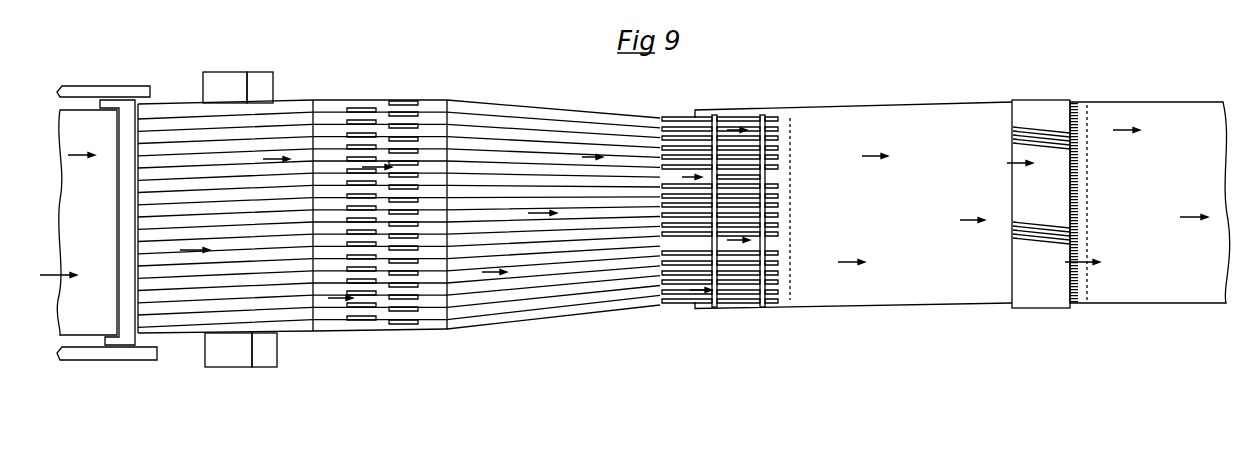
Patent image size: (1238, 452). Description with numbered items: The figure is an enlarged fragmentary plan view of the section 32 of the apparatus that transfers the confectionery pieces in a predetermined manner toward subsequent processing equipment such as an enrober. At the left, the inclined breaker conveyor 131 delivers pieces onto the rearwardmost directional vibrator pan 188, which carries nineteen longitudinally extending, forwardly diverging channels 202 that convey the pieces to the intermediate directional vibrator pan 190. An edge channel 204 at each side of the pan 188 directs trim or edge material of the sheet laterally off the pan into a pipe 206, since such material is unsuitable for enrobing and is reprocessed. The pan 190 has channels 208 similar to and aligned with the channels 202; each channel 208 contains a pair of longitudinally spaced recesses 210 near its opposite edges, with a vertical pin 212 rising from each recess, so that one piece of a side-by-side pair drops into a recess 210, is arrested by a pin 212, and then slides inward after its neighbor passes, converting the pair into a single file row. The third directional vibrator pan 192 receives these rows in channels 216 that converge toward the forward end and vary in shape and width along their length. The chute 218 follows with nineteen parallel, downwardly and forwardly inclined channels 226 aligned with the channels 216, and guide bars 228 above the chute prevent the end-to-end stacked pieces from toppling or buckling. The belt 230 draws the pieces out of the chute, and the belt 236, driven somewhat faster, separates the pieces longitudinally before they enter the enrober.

The section 32 is at (547, 74).
The conveyor 131 is at (55, 242).
The directional vibrator pan 188 is at (182, 338).
The directional vibrator pan 190 is at (412, 334).
The directional vibrator pan 192 is at (573, 315).
The channels 202 is at (143, 195).
The edge channel 204 is at (218, 108).
The pipe 206 is at (217, 78).
The channels 208 is at (333, 108).
The recesses 210 is at (362, 330).
The pin 212 is at (407, 107).
The channels 216 is at (507, 137).
The chute 218 is at (732, 105).
The channels 226 is at (677, 132).
The guide bars 228 is at (763, 117).
The belt 230 is at (909, 205).
The belt 236 is at (1142, 215).